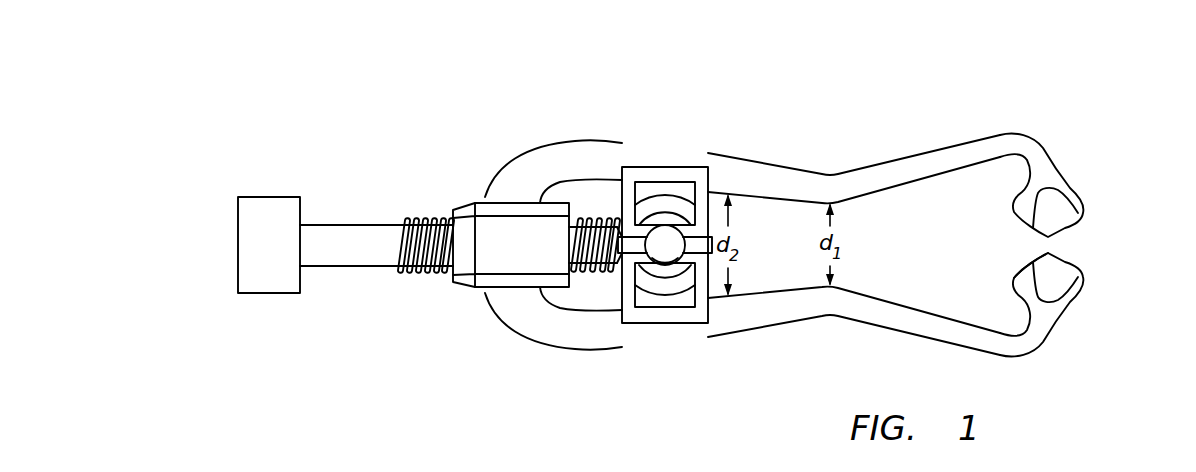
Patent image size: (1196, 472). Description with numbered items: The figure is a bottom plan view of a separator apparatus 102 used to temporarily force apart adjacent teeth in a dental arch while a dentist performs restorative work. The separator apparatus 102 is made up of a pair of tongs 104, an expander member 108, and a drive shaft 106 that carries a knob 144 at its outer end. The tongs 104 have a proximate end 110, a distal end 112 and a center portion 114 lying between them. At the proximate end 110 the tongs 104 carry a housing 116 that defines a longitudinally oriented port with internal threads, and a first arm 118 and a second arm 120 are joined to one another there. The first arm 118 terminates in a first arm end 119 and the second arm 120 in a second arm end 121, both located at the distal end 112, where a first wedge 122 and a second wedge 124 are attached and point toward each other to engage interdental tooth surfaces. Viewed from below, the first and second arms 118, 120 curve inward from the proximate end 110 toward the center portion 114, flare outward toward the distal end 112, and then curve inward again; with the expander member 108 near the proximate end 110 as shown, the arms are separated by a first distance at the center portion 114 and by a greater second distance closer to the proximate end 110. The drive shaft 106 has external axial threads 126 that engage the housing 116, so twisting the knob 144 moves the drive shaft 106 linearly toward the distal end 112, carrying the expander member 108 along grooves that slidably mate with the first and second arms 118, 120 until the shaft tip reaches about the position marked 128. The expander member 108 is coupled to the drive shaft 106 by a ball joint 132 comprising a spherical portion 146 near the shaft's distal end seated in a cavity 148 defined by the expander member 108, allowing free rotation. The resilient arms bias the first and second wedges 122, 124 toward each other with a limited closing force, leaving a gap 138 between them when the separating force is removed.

The separator apparatus 102 is at (484, 357).
The tongs 104 is at (745, 318).
The drive shaft 106 is at (350, 228).
The expander member 108 is at (700, 191).
The proximate end 110 is at (834, 241).
The distal end 112 is at (1065, 203).
The center portion 114 is at (830, 190).
The housing 116 is at (480, 203).
The first arm 118 is at (575, 340).
The first arm end 119 is at (1042, 320).
The second arm 120 is at (575, 153).
The second arm end 121 is at (1040, 153).
The first wedge 122 is at (1062, 275).
The second wedge 124 is at (1062, 207).
The external axial threads 126 is at (420, 270).
The position of drive shaft distal end 128 is at (887, 243).
The ball joint 132 is at (665, 235).
The gap 138 is at (1042, 245).
The knob 144 is at (272, 280).
The spherical portion 146 is at (678, 222).
The cavity 148 is at (668, 264).